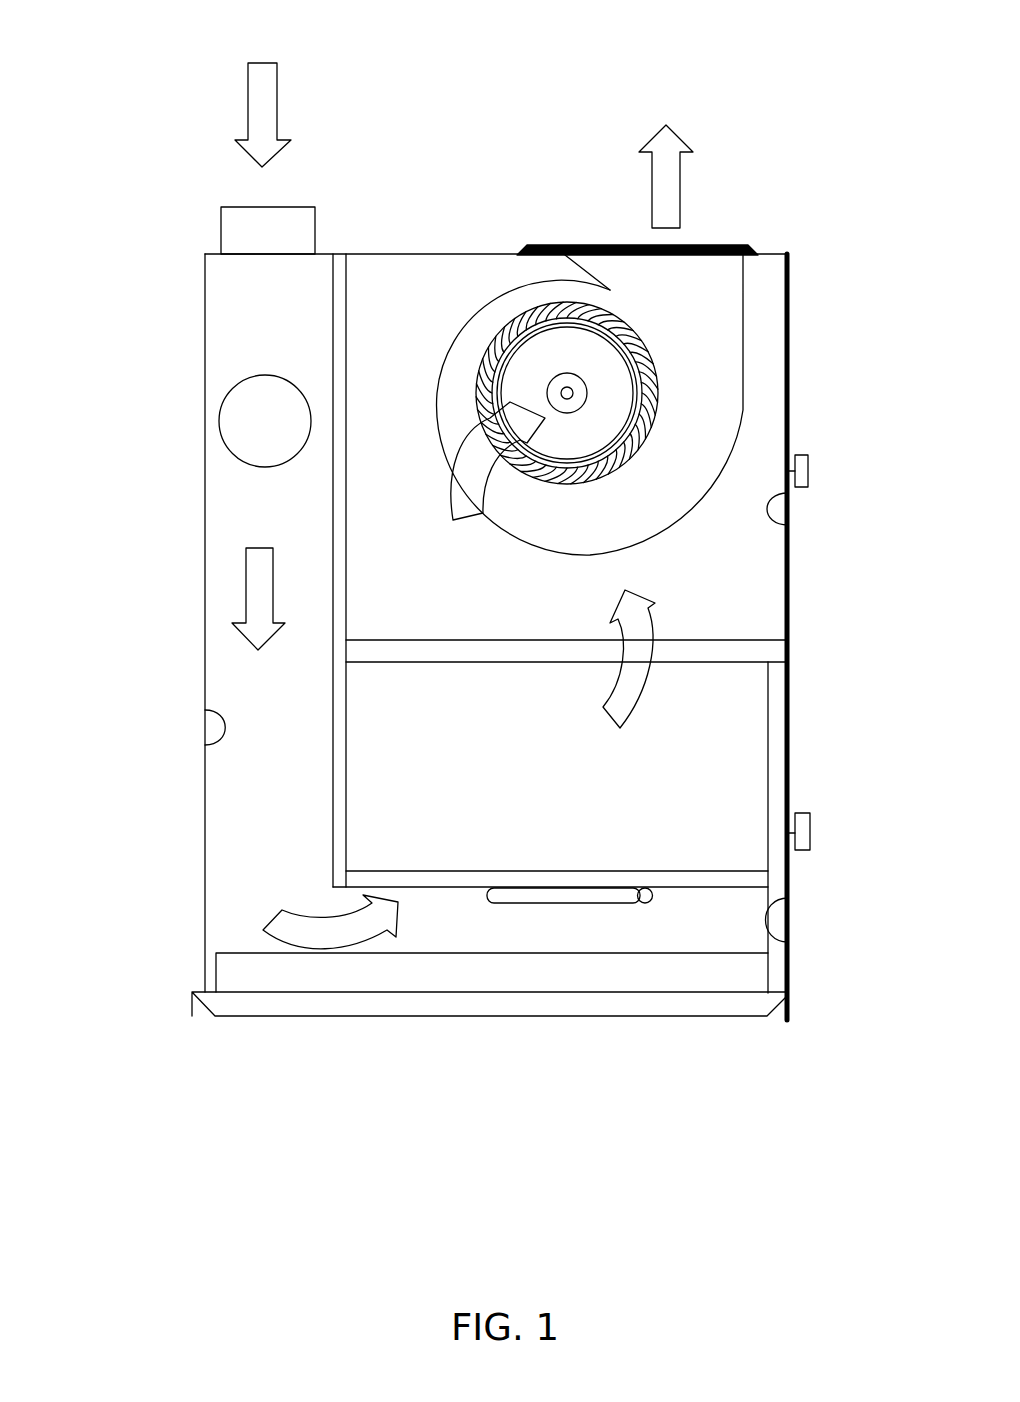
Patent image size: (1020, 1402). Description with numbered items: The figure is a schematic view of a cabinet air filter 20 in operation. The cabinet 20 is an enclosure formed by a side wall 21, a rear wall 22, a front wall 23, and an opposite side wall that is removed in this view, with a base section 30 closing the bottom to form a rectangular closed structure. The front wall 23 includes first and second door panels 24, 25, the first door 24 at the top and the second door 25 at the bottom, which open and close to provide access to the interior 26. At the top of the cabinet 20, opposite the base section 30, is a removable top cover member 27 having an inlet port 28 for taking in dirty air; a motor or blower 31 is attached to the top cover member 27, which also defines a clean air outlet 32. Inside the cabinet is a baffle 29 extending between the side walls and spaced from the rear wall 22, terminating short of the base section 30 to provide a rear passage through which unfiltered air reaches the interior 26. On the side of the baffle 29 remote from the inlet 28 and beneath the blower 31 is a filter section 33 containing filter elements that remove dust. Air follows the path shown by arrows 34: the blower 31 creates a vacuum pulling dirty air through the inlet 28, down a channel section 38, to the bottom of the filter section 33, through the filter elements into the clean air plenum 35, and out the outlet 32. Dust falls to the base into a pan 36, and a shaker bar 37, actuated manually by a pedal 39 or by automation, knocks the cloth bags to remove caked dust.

The cabinet air filter 20 is at (601, 130).
The side wall 21 is at (748, 553).
The rear wall 22 is at (202, 487).
The front wall 23 is at (788, 593).
The first door panel 24 is at (790, 337).
The second door panel 25 is at (788, 762).
The interior 26 is at (788, 900).
The top cover member 27 is at (397, 253).
The inlet port 28 is at (250, 207).
The baffle 29 is at (333, 356).
The base section 30 is at (320, 1002).
The blower 31 is at (530, 365).
The clean air outlet 32 is at (698, 247).
The filter section 33 is at (698, 742).
The arrows 34 is at (247, 100).
The clean air plenum 35 is at (788, 498).
The pan 36 is at (695, 970).
The shaker bar 37 is at (548, 895).
The channel section 38 is at (205, 712).
The pedal 39 is at (800, 833).